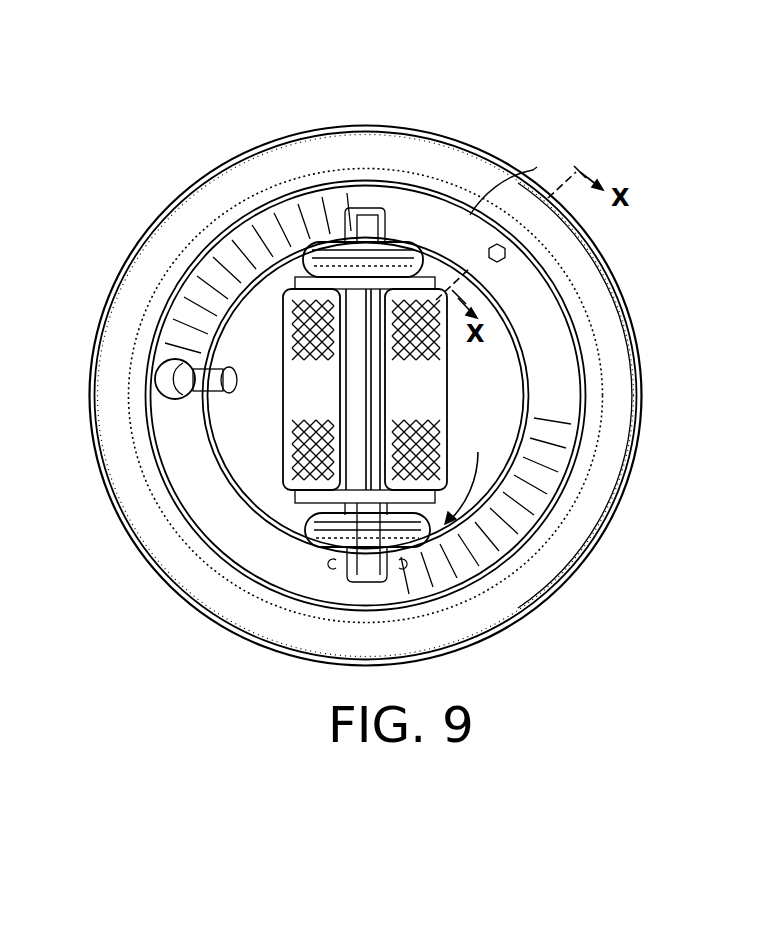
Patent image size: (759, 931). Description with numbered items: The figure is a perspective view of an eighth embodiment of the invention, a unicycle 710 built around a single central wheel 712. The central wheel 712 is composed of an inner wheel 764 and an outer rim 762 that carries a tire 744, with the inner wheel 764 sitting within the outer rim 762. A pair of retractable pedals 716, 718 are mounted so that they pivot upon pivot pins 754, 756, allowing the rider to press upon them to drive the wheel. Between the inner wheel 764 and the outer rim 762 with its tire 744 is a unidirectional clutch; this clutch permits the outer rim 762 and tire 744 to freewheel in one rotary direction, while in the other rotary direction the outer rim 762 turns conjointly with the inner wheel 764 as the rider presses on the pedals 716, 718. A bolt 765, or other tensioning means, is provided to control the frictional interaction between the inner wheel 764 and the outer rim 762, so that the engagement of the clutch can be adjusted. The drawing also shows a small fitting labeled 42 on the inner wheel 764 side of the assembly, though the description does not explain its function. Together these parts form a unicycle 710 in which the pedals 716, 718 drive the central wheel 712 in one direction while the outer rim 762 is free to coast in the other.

The unicycle 710 is at (187, 163).
The central wheel 712 is at (440, 258).
The retractable pedal 716 is at (290, 467).
The retractable pedal 718 is at (475, 471).
The tire 744 is at (617, 390).
The pivot pin 754 is at (333, 572).
The pivot pin 756 is at (407, 215).
The outer rim 762 is at (580, 470).
The inner wheel 764 is at (243, 542).
The bolt 765 is at (507, 260).
The valve stem 42 is at (231, 393).